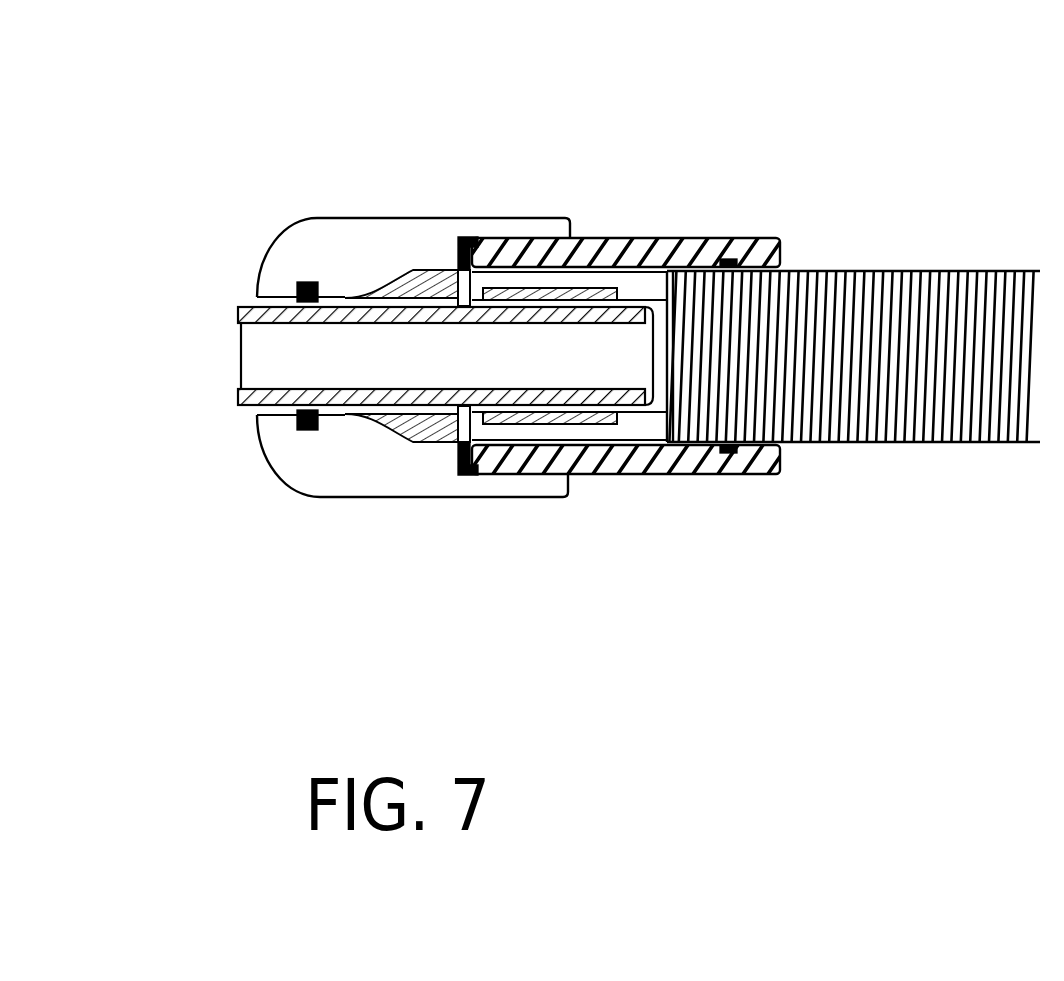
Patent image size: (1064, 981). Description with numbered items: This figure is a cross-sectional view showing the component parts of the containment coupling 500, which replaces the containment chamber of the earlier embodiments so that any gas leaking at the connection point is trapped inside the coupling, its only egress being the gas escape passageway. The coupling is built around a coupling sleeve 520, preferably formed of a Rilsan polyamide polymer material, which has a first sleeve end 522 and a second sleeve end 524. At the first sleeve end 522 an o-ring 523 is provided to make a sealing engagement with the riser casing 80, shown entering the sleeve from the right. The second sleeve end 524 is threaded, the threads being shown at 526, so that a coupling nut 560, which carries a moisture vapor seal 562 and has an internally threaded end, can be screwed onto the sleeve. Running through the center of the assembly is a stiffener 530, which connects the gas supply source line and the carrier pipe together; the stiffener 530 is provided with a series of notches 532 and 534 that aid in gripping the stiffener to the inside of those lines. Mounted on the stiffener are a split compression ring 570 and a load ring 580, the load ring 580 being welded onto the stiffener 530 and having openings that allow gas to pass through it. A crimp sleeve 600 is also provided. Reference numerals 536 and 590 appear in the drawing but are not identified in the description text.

The containment coupling 500 is at (487, 213).
The riser casing 80 is at (880, 270).
The coupling sleeve 520 is at (713, 478).
The first sleeve end 522 is at (780, 238).
The o-ring 523 is at (737, 450).
The second sleeve end 524 is at (517, 240).
The threads 526 is at (575, 237).
The stiffener 530 is at (238, 400).
The notch 532 is at (300, 432).
The notch 534 is at (538, 405).
The upper wedge 536 is at (378, 293).
The coupling nut 560 is at (390, 478).
The moisture vapor seal 562 is at (300, 283).
The split compression ring 570 is at (390, 440).
The load ring 580 is at (457, 453).
The spacer bar 590 is at (473, 473).
The crimp sleeve 600 is at (565, 422).